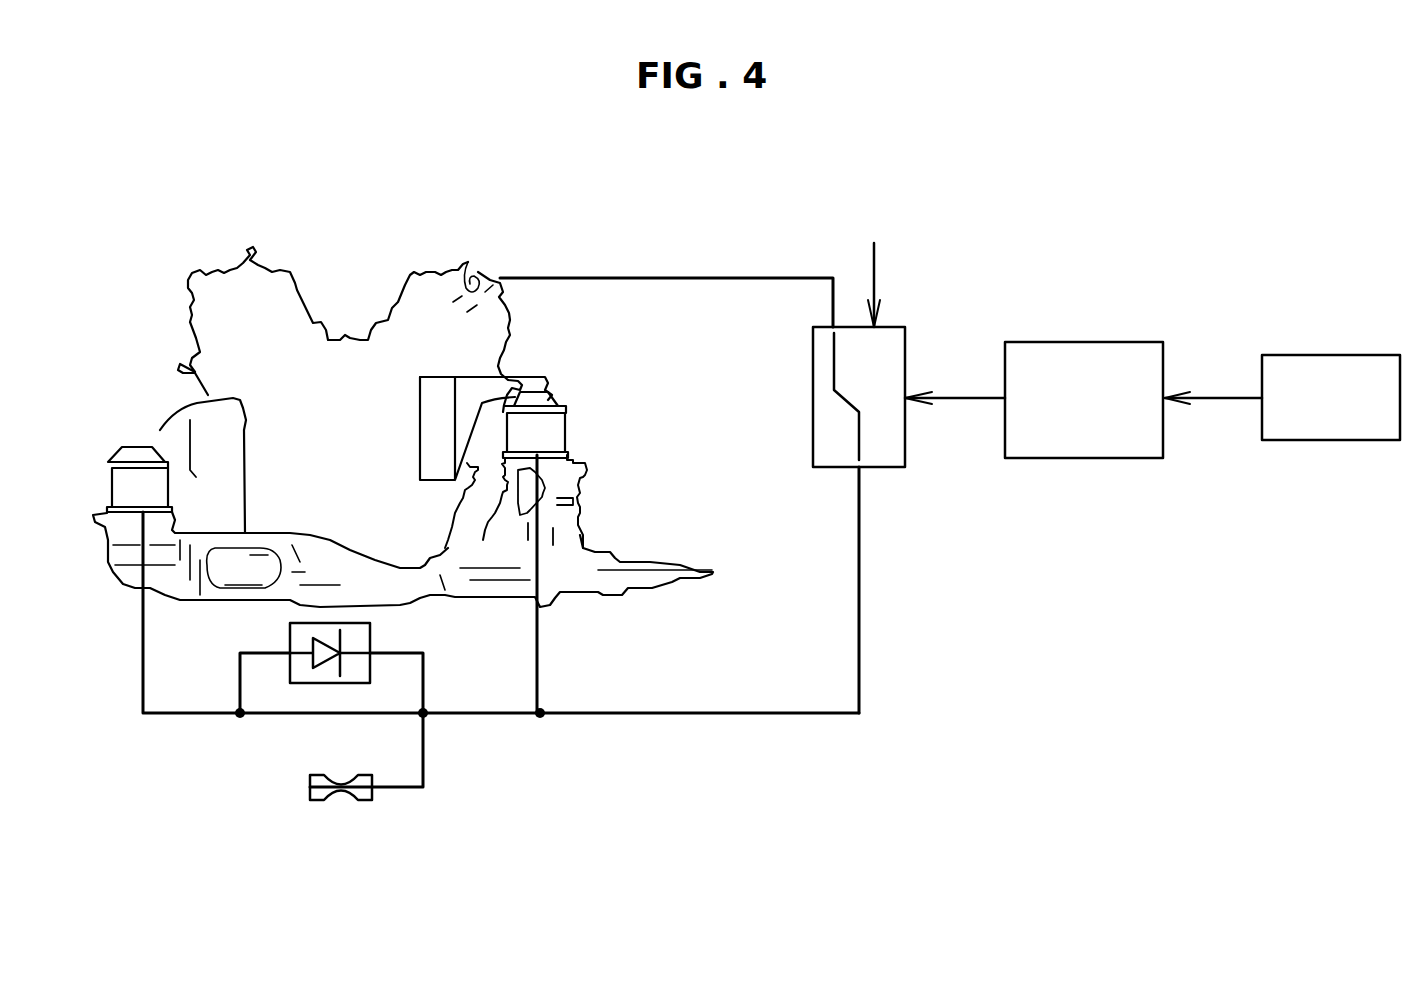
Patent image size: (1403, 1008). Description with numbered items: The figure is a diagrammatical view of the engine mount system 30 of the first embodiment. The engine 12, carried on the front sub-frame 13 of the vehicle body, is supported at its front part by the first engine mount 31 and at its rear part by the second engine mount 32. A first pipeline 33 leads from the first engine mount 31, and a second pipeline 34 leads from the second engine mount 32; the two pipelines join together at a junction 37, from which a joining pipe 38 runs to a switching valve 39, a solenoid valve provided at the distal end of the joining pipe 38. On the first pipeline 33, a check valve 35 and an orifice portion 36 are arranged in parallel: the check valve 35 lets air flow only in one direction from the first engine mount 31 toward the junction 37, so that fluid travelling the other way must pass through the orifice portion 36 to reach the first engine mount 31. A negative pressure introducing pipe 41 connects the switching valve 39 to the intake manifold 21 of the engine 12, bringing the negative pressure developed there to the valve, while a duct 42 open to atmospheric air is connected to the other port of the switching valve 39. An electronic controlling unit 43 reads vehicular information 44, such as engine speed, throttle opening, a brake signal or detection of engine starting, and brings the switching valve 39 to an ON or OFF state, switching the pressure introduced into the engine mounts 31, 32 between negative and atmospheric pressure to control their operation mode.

The engine 12 is at (433, 257).
The front sub-frame 13 is at (200, 617).
The intake manifold 21 is at (470, 270).
The engine mount system 30 is at (240, 122).
The first engine mount 31 is at (143, 428).
The second engine mount 32 is at (548, 435).
The first pipeline 33 is at (207, 715).
The second pipeline 34 is at (543, 663).
The check valve 35 is at (320, 620).
The orifice portion 36 is at (317, 803).
The junction 37 is at (545, 718).
The joining pipe 38 is at (865, 700).
The switching valve 39 is at (890, 468).
The negative pressure introducing pipe 41 is at (700, 275).
The duct 42 is at (872, 266).
The electronic controlling unit 43 is at (1100, 342).
The vehicular information 44 is at (1310, 355).